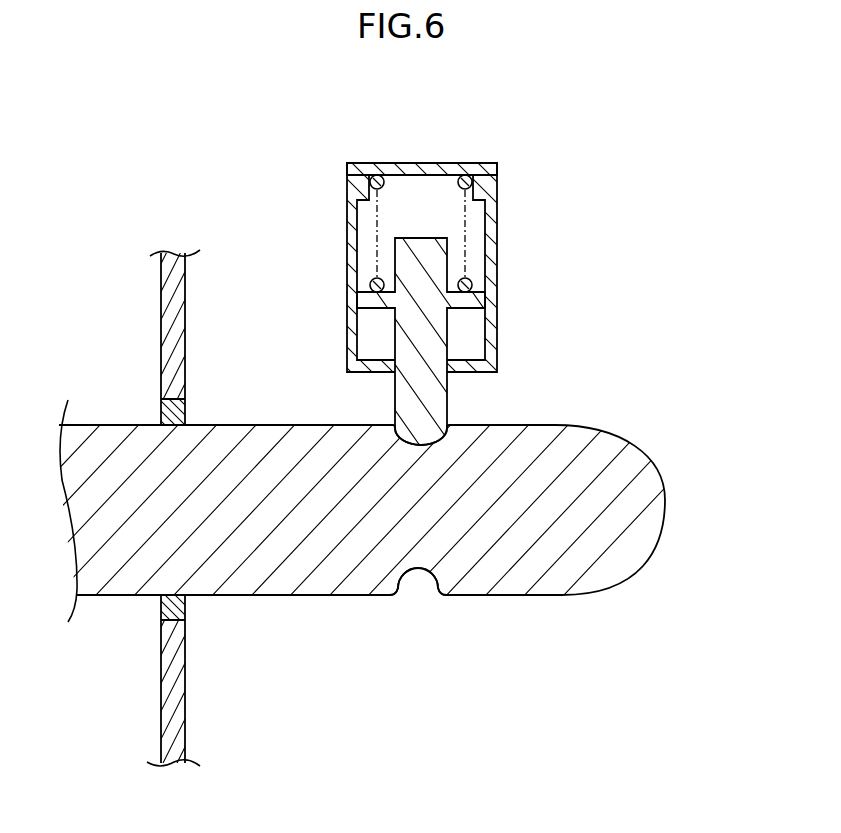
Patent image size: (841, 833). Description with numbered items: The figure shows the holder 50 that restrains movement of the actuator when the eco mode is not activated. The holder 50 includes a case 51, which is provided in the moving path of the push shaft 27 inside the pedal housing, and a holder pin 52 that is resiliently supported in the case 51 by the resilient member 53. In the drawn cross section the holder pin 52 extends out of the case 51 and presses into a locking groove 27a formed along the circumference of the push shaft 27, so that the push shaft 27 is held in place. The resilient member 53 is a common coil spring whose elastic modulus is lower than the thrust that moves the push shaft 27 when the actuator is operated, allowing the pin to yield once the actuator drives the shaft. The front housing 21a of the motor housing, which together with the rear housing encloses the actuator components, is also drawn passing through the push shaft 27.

The front housing 21a is at (176, 340).
The push shaft 27 is at (628, 540).
The locking groove 27a is at (408, 578).
The holder 50 is at (478, 160).
The case 51 is at (422, 163).
The holder pin 52 is at (430, 325).
The resilient member 53 is at (470, 237).